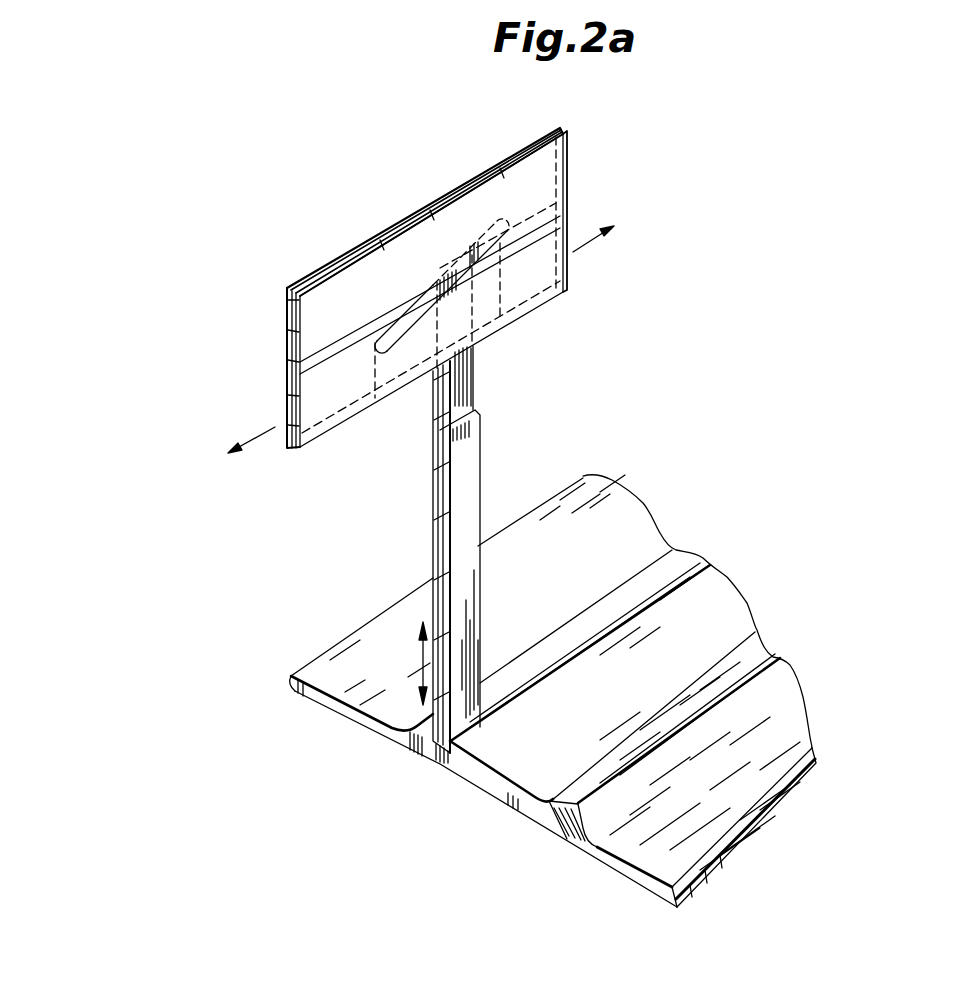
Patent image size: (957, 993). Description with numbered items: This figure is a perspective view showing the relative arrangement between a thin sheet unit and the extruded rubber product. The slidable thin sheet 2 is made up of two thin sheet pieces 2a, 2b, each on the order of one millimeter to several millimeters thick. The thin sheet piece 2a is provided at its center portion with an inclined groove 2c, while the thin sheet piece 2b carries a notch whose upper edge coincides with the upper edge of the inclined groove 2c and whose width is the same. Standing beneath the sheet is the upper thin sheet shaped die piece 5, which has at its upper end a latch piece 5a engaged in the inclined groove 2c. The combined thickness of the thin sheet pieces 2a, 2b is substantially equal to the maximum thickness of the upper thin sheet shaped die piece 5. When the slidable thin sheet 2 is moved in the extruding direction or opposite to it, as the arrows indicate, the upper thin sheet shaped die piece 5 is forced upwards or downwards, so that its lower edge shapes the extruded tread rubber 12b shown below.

The slidable thin sheet 2 is at (543, 190).
The thin sheet piece 2a is at (567, 138).
The thin sheet piece 2b is at (565, 128).
The inclined groove 2c is at (506, 235).
The upper thin sheet shaped die piece 5 is at (473, 475).
The latch piece 5a is at (468, 263).
The tread rubber 12b is at (550, 814).